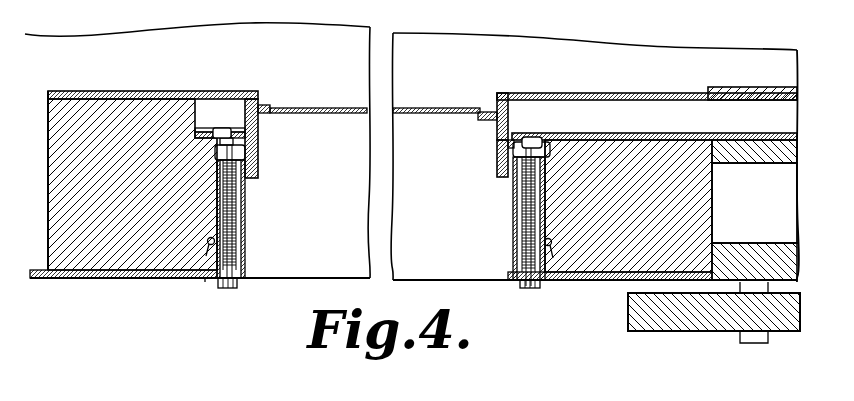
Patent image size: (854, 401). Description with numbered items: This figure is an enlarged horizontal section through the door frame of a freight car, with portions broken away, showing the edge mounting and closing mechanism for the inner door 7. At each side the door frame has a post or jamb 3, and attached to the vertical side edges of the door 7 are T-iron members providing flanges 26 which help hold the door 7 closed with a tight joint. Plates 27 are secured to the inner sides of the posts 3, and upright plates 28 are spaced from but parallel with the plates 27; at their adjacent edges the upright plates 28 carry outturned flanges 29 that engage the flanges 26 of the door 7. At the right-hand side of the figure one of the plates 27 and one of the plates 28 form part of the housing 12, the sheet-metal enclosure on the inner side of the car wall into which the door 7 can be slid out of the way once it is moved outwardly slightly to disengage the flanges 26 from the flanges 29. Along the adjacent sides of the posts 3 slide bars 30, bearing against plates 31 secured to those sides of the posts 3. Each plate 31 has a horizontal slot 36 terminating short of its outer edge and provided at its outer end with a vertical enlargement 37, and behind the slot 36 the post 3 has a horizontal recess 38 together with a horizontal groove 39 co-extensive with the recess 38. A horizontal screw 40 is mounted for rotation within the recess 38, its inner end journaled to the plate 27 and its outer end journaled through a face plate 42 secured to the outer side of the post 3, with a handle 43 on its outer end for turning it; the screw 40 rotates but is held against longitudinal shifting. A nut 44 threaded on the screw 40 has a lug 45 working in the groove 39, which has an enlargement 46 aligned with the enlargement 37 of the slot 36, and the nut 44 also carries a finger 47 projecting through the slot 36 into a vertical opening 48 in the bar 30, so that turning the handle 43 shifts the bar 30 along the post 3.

The posts or jambs 3 is at (132, 255).
The door 7 is at (408, 108).
The housing 12 is at (750, 88).
The flanges 26 is at (245, 95).
The plates 27 is at (210, 133).
The upright plates 28 is at (117, 92).
The outturned flanges 29 is at (263, 103).
The bars 30 is at (260, 133).
The plates 31 is at (247, 258).
The horizontal slots 36 is at (247, 210).
The vertical enlargements 37 is at (247, 240).
The horizontal recesses 38 is at (238, 195).
The horizontal grooves 39 is at (190, 234).
The horizontal screws 40 is at (227, 203).
The face plates 42 is at (208, 282).
The handles 43 is at (238, 285).
The nut 44 is at (218, 130).
The lug 45 is at (565, 150).
The enlargement 46 is at (212, 245).
The finger 47 is at (243, 153).
The vertical opening 48 is at (497, 160).